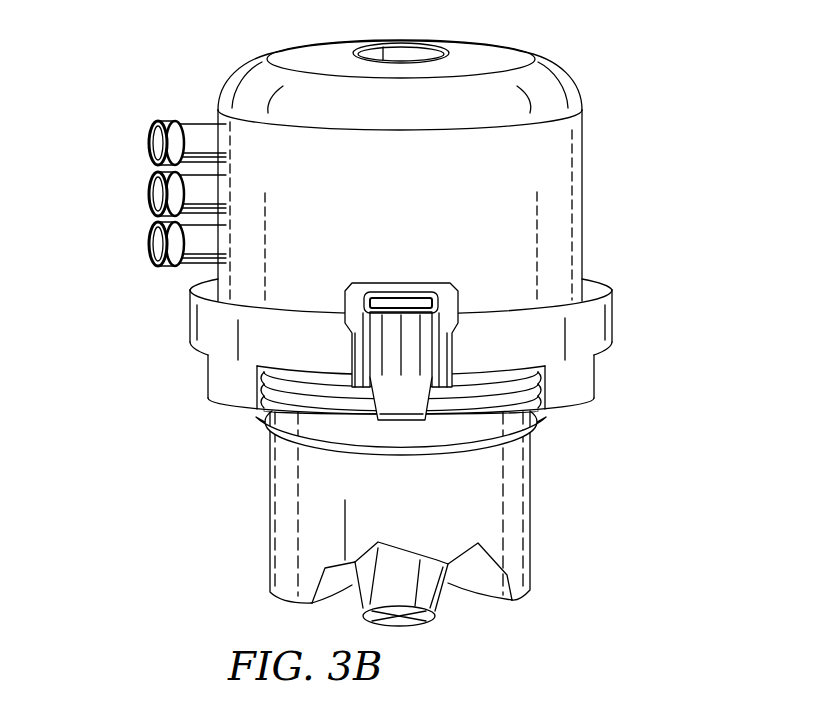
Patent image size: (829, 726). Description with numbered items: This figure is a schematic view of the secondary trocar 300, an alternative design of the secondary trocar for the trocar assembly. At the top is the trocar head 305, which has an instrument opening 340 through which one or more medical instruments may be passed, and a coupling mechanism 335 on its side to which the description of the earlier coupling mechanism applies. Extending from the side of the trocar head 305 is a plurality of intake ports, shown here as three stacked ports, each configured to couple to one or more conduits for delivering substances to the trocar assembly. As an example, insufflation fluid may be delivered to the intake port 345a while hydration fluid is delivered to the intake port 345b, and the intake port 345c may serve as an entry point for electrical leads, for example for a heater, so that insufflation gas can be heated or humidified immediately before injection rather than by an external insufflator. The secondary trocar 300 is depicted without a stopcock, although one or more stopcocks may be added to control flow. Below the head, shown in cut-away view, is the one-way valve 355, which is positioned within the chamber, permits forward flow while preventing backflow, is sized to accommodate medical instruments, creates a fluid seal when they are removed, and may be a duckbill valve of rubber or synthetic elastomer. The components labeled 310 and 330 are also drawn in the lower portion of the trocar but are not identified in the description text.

The secondary trocar 300 is at (584, 59).
The trocar head 305 is at (560, 212).
The tubular insert 310 is at (270, 517).
The seal ring 330 is at (546, 443).
The coupling mechanism 335 is at (392, 313).
The instrument opening 340 is at (407, 54).
The intake port 345a is at (157, 143).
The intake port 345b is at (157, 196).
The intake port 345c is at (157, 246).
The one-way valve 355 is at (432, 621).